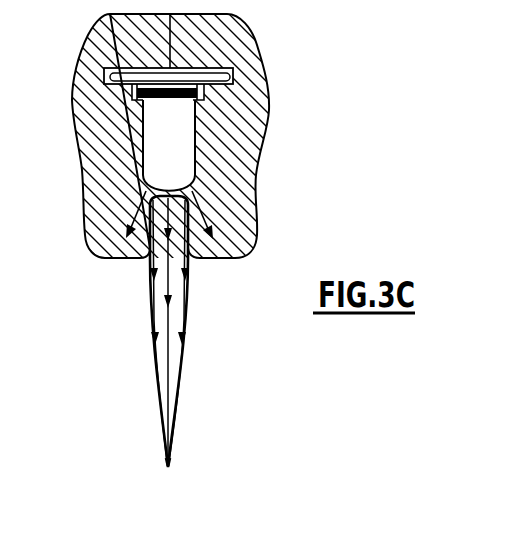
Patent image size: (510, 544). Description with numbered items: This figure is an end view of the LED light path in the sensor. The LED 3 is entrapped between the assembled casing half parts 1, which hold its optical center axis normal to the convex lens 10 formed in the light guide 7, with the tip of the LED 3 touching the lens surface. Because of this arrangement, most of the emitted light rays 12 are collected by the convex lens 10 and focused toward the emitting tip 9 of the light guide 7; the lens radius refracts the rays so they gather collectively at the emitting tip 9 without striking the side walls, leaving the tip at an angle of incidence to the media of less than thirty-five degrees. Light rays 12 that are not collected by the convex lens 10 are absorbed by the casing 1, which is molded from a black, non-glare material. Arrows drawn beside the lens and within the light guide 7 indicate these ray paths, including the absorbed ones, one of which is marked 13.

The casing half parts 1 is at (81, 135).
The LED 3 is at (183, 142).
The light guide 7 is at (151, 319).
The emitting tip 9 is at (168, 466).
The convex lens 10 is at (143, 196).
The light rays 12 is at (173, 322).
The right flow passage 13 is at (192, 213).